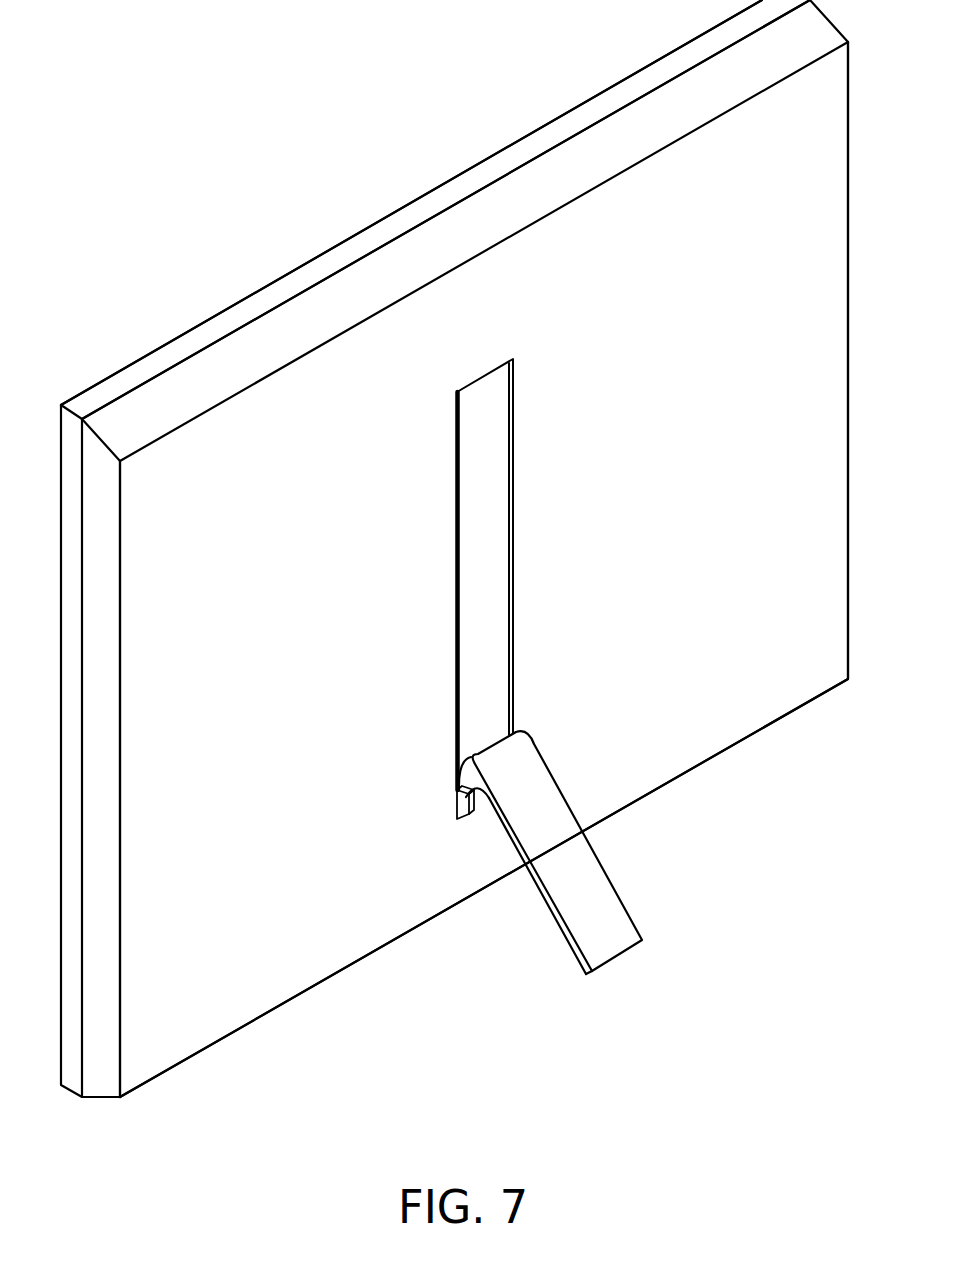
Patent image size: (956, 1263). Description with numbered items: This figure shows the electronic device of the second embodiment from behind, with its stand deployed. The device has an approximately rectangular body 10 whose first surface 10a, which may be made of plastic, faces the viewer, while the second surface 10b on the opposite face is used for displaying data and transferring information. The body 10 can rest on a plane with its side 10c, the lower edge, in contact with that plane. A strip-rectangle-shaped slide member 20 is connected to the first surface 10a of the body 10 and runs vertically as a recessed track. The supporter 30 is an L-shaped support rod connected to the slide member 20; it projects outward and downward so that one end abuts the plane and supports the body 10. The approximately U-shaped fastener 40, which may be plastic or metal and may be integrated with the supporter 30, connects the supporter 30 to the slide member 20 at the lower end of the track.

The body 10 is at (454, 548).
The first surface 10a is at (358, 367).
The second surface 10b is at (178, 337).
The side 10c is at (258, 1018).
The slide member 20 is at (492, 473).
The supporter 30 is at (588, 882).
The fastener 40 is at (475, 806).